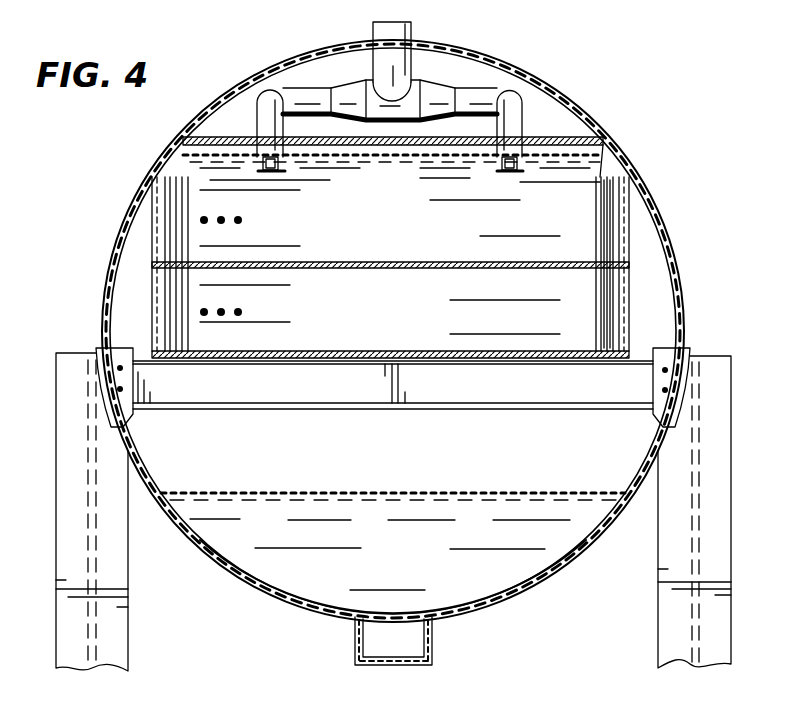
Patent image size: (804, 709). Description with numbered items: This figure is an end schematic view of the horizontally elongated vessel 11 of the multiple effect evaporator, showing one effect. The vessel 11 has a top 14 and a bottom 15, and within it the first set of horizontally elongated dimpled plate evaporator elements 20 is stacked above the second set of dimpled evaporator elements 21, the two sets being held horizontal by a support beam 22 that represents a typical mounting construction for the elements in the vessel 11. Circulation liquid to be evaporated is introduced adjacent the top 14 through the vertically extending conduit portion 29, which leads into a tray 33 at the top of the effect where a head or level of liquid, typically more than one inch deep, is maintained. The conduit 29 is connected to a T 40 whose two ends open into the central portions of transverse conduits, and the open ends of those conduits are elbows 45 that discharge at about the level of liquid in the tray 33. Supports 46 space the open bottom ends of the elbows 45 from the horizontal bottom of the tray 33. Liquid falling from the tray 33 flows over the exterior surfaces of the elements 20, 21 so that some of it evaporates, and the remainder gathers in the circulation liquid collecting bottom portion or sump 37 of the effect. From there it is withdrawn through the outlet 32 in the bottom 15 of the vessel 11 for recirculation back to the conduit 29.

The vessel 11 is at (686, 326).
The top 14 is at (495, 58).
The bottom 15 is at (461, 624).
The first set of horizontally elongated dimpled plate evaporator elements 20 is at (628, 233).
The second set of horizontally elongated dimpled evaporator elements 21 is at (605, 319).
The support beam 22 is at (488, 393).
The vertically extending conduit portion 29 is at (380, 34).
The outlet 32 is at (357, 644).
The tray 33 is at (612, 152).
The circulation liquid collecting bottom portion 37 is at (492, 463).
The T 40 is at (413, 98).
The elbows 45 is at (262, 122).
The supports 46 is at (283, 172).